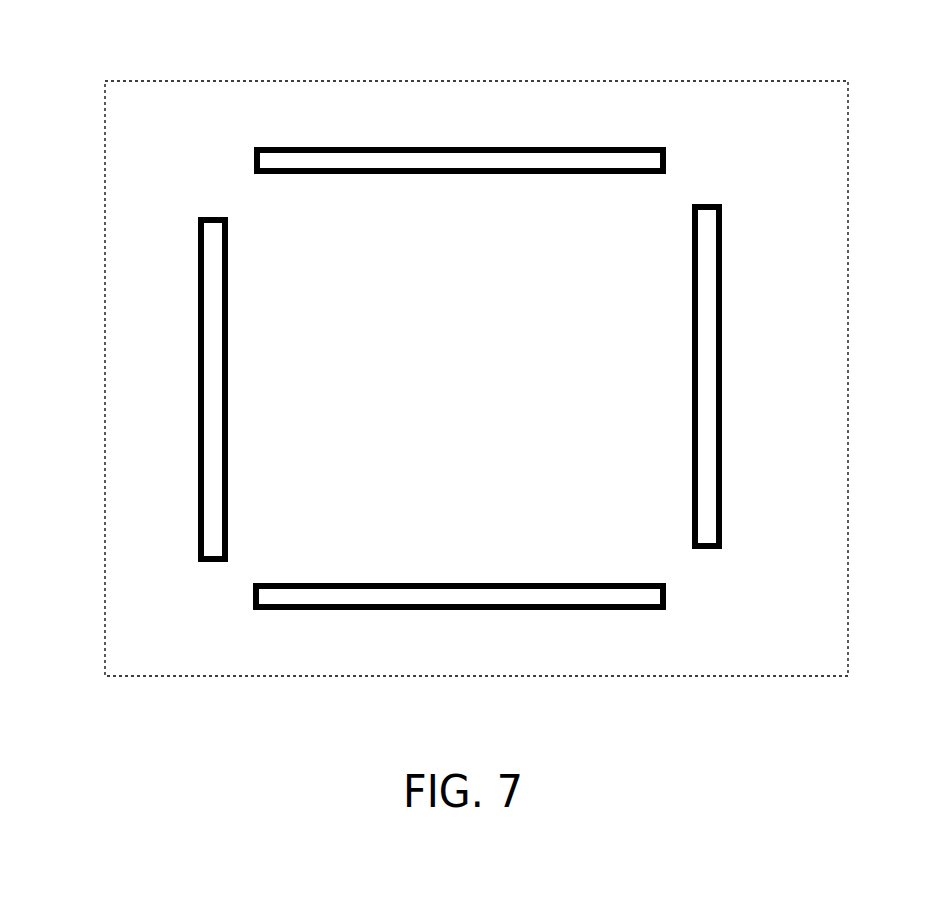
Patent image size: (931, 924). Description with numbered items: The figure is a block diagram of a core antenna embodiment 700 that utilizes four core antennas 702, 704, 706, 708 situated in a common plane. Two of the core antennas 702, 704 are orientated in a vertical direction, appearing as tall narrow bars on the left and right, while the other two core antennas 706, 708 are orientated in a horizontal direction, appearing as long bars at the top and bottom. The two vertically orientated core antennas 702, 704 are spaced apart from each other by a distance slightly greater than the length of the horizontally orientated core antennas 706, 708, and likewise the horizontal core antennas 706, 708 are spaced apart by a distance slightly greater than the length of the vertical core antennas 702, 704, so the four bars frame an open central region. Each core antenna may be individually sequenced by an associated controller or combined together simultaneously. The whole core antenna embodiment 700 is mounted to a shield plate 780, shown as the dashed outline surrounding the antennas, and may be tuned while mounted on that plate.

The core antenna embodiment 700 is at (78, 82).
The core antenna 702 is at (198, 381).
The core antenna 704 is at (723, 325).
The core antenna 706 is at (637, 147).
The core antenna 708 is at (517, 611).
The shield plate 780 is at (792, 664).